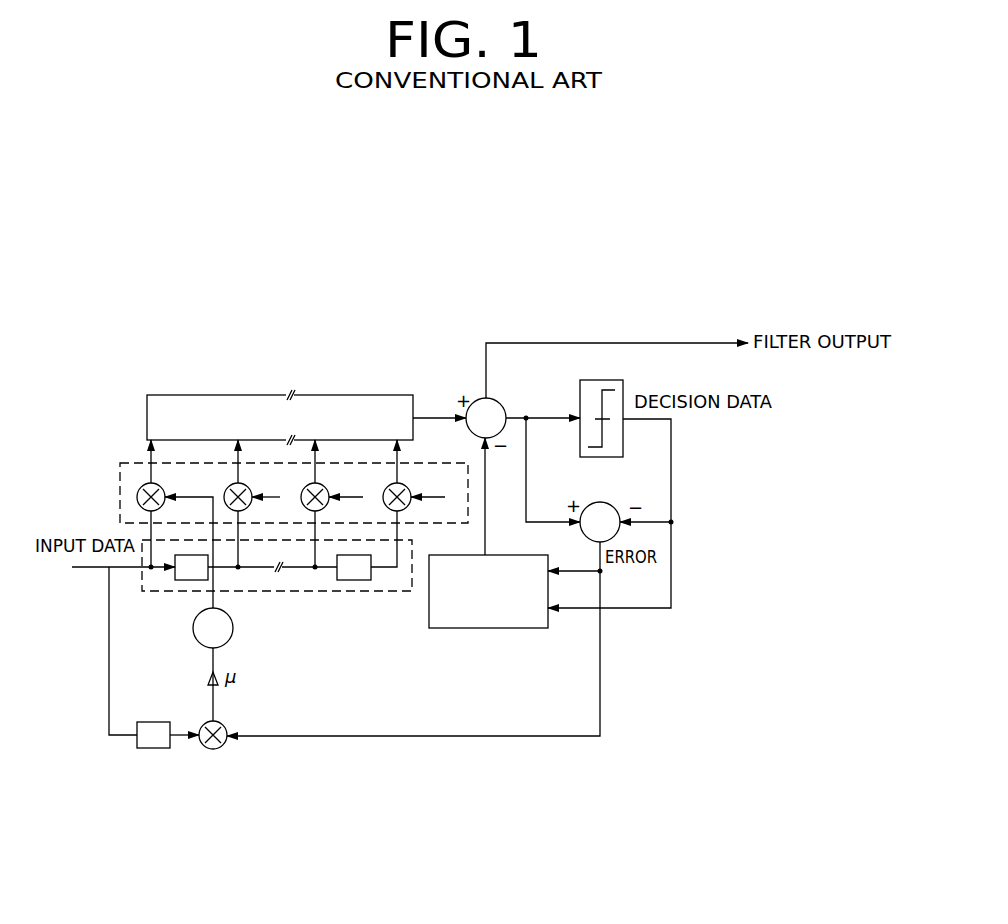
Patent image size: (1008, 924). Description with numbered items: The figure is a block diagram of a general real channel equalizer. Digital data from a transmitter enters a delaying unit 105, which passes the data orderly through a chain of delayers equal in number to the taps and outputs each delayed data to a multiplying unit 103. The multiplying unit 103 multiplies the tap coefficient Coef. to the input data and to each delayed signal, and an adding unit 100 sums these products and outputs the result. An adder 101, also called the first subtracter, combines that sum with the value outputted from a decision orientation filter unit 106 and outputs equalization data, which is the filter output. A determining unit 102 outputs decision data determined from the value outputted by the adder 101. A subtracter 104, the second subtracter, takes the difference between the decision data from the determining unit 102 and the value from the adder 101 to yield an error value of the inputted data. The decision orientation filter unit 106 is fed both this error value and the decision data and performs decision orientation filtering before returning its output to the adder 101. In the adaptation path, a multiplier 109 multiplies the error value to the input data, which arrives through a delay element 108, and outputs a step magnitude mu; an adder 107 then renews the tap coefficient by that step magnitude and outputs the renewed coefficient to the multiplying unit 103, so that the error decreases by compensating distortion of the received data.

The adding unit 100 is at (205, 395).
The adder 101 is at (499, 402).
The determining unit 102 is at (620, 380).
The multiplying unit 103 is at (118, 463).
The subtracter 104 is at (613, 505).
The delaying unit 105 is at (322, 592).
The decision orientation filter unit 106 is at (478, 628).
The adder 107 is at (193, 628).
The delay 108 is at (152, 748).
The multiplier 109 is at (227, 727).